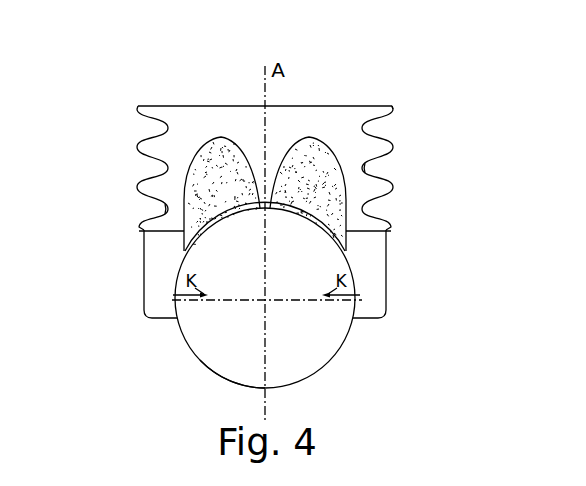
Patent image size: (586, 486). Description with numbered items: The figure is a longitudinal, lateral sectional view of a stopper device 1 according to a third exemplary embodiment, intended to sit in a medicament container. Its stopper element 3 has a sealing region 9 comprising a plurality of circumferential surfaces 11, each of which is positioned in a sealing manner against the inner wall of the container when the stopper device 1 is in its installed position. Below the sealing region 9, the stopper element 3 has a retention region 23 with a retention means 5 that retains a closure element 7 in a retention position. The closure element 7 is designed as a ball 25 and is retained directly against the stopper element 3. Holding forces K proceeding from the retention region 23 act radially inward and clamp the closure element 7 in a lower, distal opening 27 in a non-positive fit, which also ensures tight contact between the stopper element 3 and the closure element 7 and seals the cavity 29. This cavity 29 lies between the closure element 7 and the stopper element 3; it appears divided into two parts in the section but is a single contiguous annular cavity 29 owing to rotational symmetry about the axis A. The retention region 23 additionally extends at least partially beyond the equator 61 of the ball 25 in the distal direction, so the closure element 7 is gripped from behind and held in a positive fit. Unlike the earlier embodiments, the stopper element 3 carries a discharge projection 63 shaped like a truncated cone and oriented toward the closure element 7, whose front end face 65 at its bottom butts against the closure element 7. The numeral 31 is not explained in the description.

The stopper device 1 is at (163, 78).
The stopper element 3 is at (270, 112).
The retention means 5 is at (384, 304).
The closure element 7 is at (245, 310).
The sealing region 9 is at (452, 105).
The circumferential surfaces 11 is at (134, 108).
The retention region 23 is at (135, 252).
The ball 25 is at (244, 300).
The distal opening 27 is at (200, 382).
The cavity 29 is at (167, 209).
The thread groove 31 is at (363, 168).
The equator 61 is at (323, 298).
The discharge projection 63 is at (262, 200).
The front end face 65 is at (140, 229).